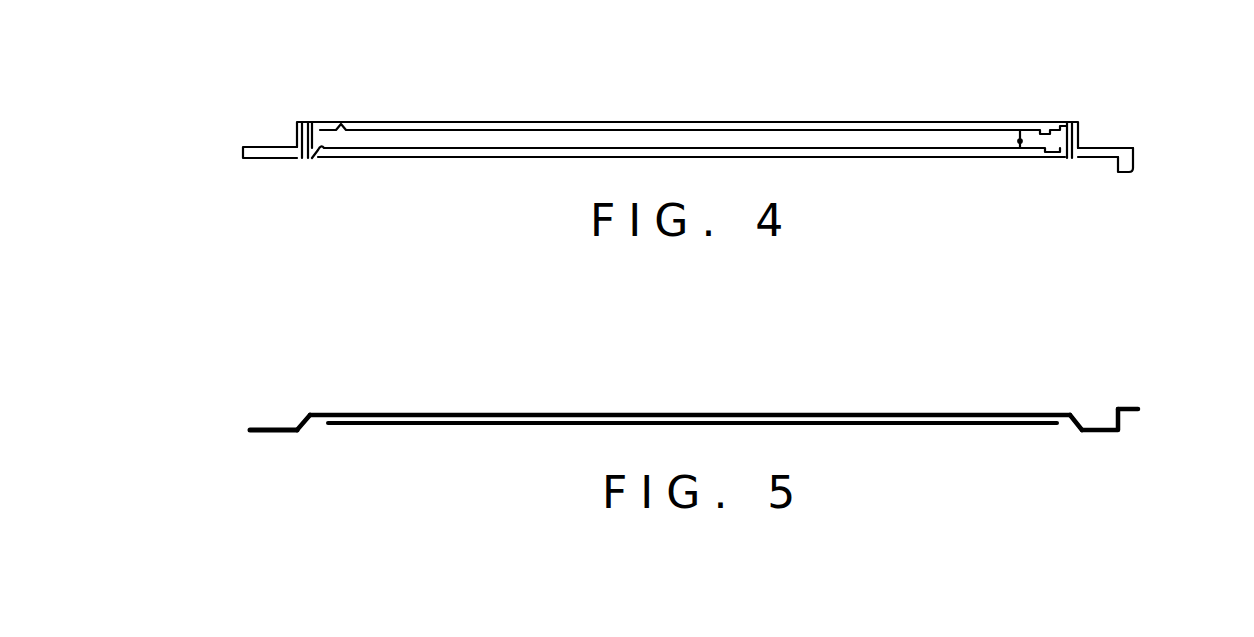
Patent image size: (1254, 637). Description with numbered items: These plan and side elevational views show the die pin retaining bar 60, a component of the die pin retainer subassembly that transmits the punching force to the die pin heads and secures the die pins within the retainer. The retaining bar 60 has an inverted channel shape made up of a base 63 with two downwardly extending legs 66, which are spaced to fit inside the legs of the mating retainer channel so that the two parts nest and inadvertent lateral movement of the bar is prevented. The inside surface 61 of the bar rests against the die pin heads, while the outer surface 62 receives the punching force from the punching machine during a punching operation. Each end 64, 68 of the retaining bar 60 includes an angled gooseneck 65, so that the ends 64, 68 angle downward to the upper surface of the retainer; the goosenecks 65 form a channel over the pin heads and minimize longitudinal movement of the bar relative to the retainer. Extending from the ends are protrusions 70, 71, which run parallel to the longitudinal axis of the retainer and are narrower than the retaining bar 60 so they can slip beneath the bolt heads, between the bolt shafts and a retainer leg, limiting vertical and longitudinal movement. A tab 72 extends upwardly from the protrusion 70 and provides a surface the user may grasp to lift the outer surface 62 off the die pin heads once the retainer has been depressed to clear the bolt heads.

In FIG. 4, the die pin retaining bar 60 is at (974, 116).
In FIG. 5, the die pin retaining bar 60 is at (930, 400).
In FIG. 5, the inside surface 61 is at (358, 426).
In FIG. 4, the outer surface 62 is at (404, 135).
In FIG. 5, the outer surface 62 is at (387, 412).
In FIG. 4, the base 63 is at (667, 138).
In FIG. 5, the base 63 is at (612, 412).
In FIG. 4, the end of the retaining bar 64 is at (1078, 164).
In FIG. 5, the end of the retaining bar 64 is at (1100, 450).
In FIG. 4, the goosenecks 65 is at (302, 122).
In FIG. 5, the goosenecks 65 is at (302, 420).
In FIG. 4, the legs 66 is at (512, 122).
In FIG. 5, the legs 66 is at (478, 422).
In FIG. 4, the end of the retaining bar 68 is at (295, 160).
In FIG. 5, the end of the retaining bar 68 is at (282, 440).
In FIG. 4, the protrusion 70 is at (1105, 148).
In FIG. 5, the protrusion 70 is at (1097, 428).
In FIG. 4, the protrusion 71 is at (270, 147).
In FIG. 5, the protrusion 71 is at (262, 426).
In FIG. 4, the tab 72 is at (1137, 172).
In FIG. 5, the tab 72 is at (1138, 407).